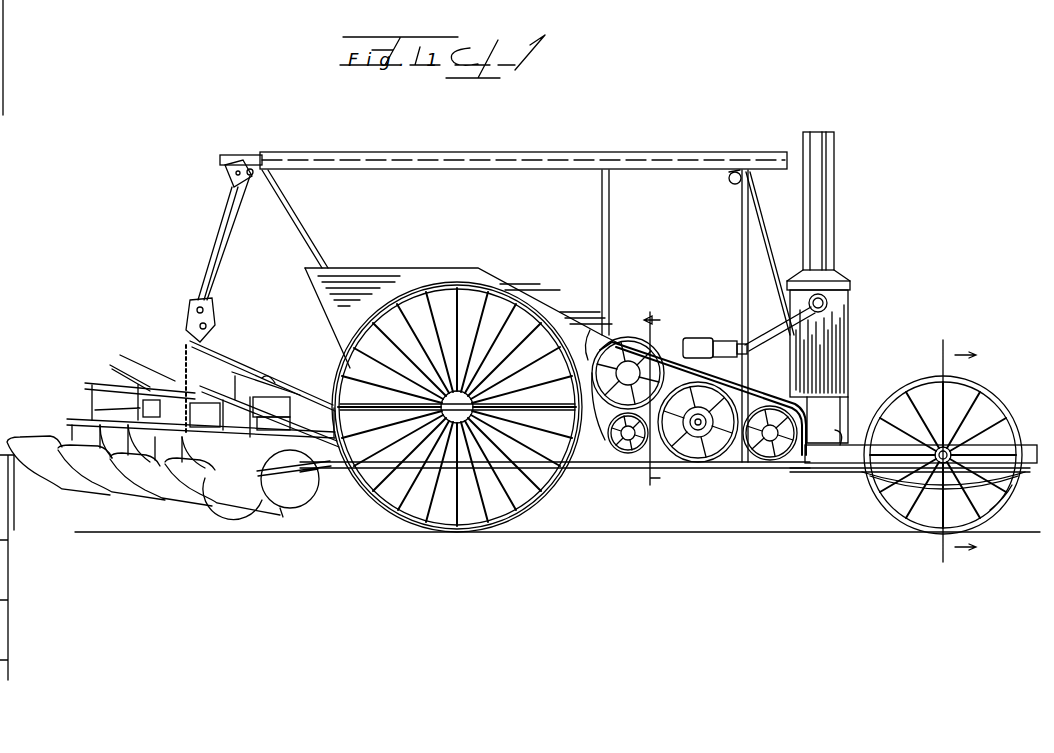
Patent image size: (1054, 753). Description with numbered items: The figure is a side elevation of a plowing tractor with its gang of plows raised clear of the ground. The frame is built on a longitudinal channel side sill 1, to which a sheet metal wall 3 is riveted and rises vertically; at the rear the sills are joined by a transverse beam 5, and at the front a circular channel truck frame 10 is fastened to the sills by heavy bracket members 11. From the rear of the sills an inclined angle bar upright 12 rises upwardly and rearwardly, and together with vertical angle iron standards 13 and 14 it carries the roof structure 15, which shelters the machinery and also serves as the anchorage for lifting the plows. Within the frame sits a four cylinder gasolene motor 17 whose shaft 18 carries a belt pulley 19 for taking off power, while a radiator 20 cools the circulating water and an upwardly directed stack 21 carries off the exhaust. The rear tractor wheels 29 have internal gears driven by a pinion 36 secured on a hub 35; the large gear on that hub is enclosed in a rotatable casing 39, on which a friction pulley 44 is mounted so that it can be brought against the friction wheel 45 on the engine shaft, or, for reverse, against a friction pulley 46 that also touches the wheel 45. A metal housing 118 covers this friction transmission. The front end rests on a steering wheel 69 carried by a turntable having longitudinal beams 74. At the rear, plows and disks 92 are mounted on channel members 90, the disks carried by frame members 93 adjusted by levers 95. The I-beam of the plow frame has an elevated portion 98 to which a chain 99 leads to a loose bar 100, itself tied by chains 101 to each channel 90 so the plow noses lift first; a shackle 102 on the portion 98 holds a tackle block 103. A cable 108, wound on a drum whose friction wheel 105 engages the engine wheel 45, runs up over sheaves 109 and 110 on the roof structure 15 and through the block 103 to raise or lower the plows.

The longitudinal channel side sill 1 is at (842, 465).
The sheet metal wall 3 is at (462, 318).
The transverse beam 5 is at (659, 401).
The circular channel truck frame 10 is at (1022, 440).
The bracket member 11 is at (835, 430).
The inclined angle bar upright 12 is at (318, 262).
The vertical angle iron standard 13 is at (600, 238).
The vertical angle iron standard 14 is at (745, 228).
The roof structure 15 is at (530, 160).
The four cylinder gasolene motor 17 is at (762, 332).
The engine shaft 18 is at (696, 460).
The belt pulley 19 is at (705, 462).
The radiator 20 is at (845, 330).
The stack 21 is at (812, 212).
The tractor wheel 29 is at (522, 504).
The hub 35 is at (141, 357).
The pinion 36 is at (562, 402).
The casing 39 is at (577, 345).
The friction pulley 44 is at (630, 340).
The friction wheel 45 is at (768, 462).
The friction pulley 46 is at (628, 455).
The steering wheel 69 is at (998, 408).
The longitudinal beam 74 is at (1005, 506).
The channel member 90 is at (150, 475).
The disk 92 is at (320, 497).
The frame member 93 is at (274, 522).
The lever 95 is at (280, 366).
The offset and elevated portion of I-beam 98 is at (248, 368).
The chain 99 is at (164, 380).
The bar 100 is at (150, 383).
The chain 101 is at (212, 440).
The shackle 102 is at (212, 333).
The tackle block 103 is at (197, 298).
The friction wheel 105 is at (805, 470).
The cable 108 is at (768, 280).
The sheave 109 is at (730, 186).
The sheave 110 is at (222, 171).
The metal housing 118 is at (706, 342).